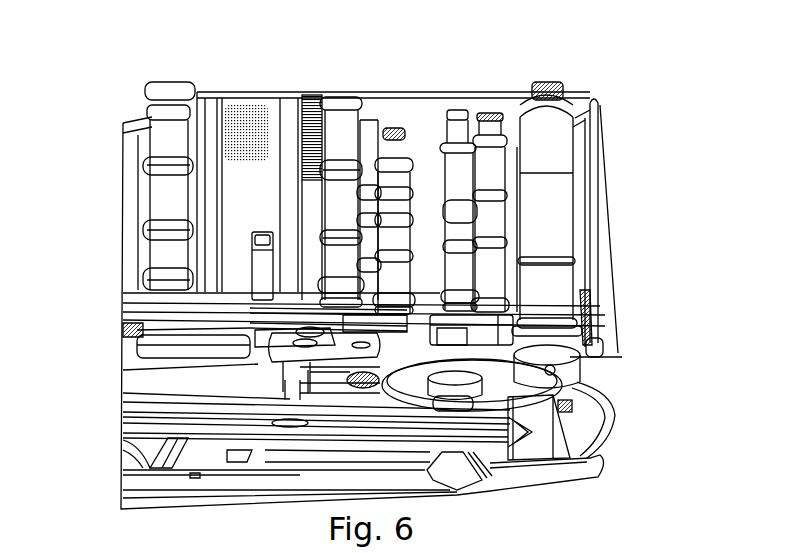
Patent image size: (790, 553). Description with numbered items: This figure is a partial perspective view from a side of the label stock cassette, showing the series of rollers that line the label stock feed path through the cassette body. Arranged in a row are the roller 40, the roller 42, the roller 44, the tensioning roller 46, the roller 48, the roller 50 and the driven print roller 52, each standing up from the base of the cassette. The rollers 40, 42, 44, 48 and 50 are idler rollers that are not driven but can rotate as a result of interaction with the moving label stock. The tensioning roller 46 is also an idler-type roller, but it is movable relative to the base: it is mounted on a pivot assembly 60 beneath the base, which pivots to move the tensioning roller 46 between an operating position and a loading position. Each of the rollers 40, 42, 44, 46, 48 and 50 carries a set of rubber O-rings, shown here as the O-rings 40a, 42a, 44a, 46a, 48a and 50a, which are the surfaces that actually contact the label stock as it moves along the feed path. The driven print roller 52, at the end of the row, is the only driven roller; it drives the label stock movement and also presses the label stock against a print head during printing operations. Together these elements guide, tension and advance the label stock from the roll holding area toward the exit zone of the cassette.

The roller 40 is at (152, 118).
The rubber O-ring 40a is at (160, 160).
The roller 42 is at (328, 125).
The rubber O-ring 42a is at (327, 173).
The roller 44 is at (374, 122).
The rubber O-ring 44a is at (371, 120).
The tensioning roller 46 is at (403, 158).
The rubber O-ring 46a is at (460, 147).
The roller 48 is at (460, 128).
The rubber O-ring 48a is at (500, 130).
The roller 50 is at (560, 85).
The rubber O-ring 50a is at (490, 187).
The driven print roller 52 is at (557, 190).
The pivot assembly 60 is at (257, 362).